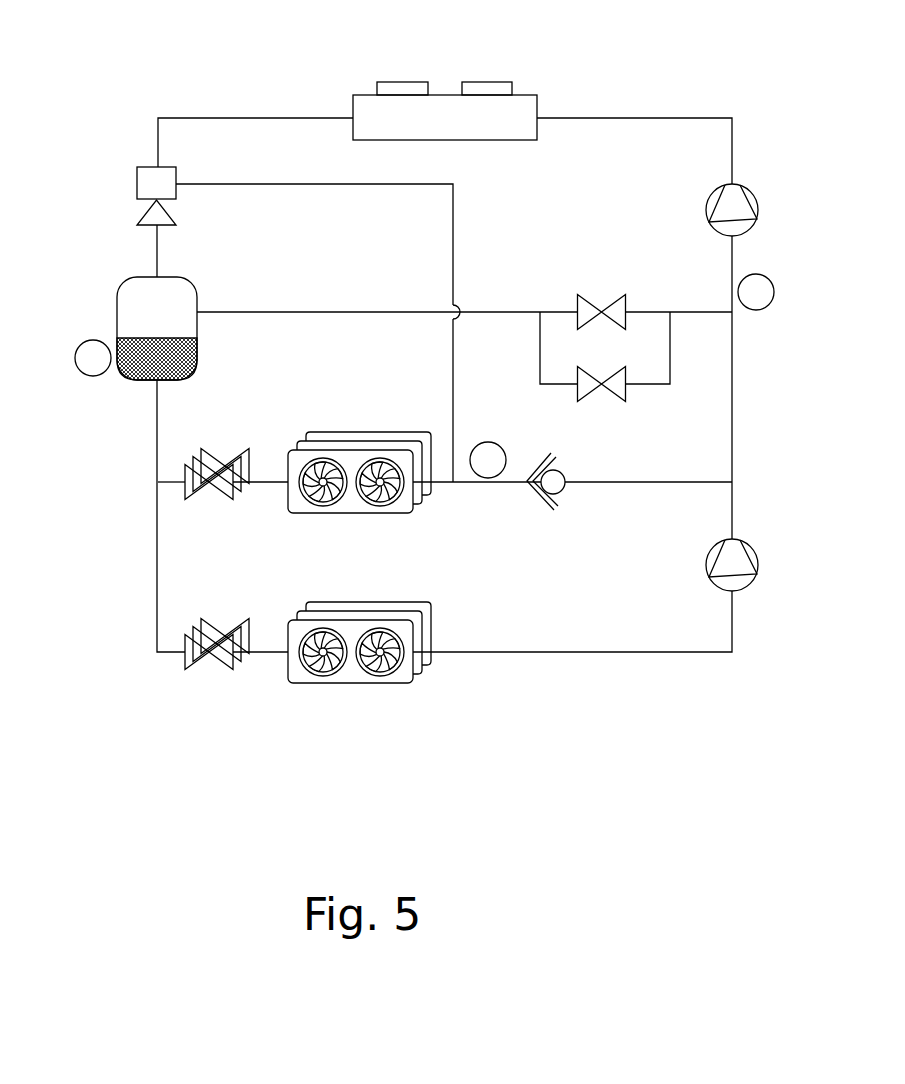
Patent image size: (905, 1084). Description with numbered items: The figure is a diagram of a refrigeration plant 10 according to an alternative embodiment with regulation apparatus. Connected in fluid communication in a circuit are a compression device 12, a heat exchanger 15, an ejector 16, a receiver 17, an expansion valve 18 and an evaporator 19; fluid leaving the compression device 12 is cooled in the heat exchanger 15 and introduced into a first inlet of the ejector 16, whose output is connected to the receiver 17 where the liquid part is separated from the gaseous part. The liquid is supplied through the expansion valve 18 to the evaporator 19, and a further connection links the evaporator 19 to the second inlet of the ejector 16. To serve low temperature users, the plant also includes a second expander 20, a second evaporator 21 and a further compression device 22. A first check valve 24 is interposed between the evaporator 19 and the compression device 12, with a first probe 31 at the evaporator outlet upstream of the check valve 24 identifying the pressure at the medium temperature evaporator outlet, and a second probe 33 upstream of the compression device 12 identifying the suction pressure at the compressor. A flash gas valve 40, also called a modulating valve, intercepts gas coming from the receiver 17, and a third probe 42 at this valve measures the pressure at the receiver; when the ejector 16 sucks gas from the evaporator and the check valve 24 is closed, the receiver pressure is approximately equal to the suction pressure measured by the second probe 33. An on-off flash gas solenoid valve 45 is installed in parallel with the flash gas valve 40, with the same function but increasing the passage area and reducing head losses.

The refrigeration plant 10 is at (116, 64).
The compression device 12 is at (752, 196).
The heat exchanger 15 is at (525, 108).
The ejector 16 is at (170, 180).
The receiver 17 is at (183, 295).
The expansion valve 18 is at (222, 492).
The evaporator 19 is at (405, 508).
The second expander 20 is at (222, 662).
The second evaporator 21 is at (405, 678).
The further compression device 22 is at (750, 549).
The first check valve 24 is at (559, 488).
The first probe 31 is at (499, 446).
The second probe 33 is at (769, 305).
The flash gas valve 40 is at (598, 322).
The third probe 42 is at (78, 370).
The flash gas solenoid valve 45 is at (603, 389).